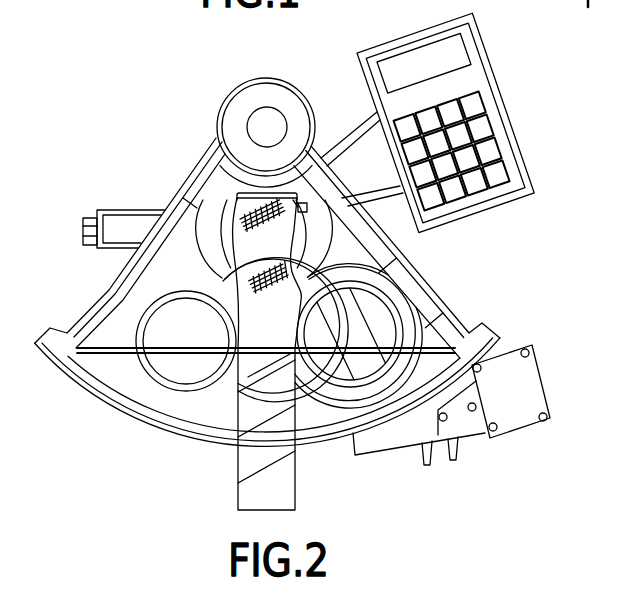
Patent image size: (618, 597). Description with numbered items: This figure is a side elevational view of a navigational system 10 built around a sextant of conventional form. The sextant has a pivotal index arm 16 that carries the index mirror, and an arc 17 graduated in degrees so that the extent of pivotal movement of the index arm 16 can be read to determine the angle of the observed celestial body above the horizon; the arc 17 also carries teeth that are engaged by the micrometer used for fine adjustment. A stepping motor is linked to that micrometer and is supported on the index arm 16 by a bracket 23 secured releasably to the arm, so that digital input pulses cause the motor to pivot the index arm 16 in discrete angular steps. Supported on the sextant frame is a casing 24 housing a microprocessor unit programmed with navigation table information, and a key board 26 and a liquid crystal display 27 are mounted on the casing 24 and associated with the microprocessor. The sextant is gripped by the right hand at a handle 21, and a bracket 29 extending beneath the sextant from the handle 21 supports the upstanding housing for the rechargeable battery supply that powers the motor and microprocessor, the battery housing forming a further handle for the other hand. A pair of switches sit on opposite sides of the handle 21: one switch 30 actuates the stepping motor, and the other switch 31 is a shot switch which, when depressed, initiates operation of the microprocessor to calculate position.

The navigational system 10 is at (87, 407).
The index arm 16 is at (350, 323).
The arc 17 is at (147, 413).
The handle 21 is at (236, 193).
The bracket 23 is at (512, 423).
The casing 24 is at (500, 197).
The key board 26 is at (417, 63).
The liquid crystal display 27 is at (500, 133).
The bracket 29 is at (248, 462).
The switch 30 is at (208, 198).
The shot switch 31 is at (318, 163).